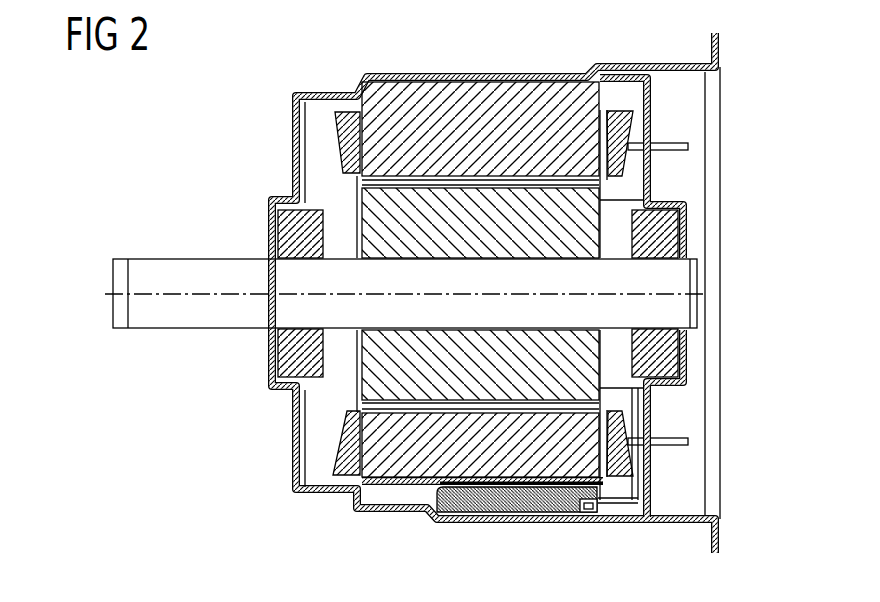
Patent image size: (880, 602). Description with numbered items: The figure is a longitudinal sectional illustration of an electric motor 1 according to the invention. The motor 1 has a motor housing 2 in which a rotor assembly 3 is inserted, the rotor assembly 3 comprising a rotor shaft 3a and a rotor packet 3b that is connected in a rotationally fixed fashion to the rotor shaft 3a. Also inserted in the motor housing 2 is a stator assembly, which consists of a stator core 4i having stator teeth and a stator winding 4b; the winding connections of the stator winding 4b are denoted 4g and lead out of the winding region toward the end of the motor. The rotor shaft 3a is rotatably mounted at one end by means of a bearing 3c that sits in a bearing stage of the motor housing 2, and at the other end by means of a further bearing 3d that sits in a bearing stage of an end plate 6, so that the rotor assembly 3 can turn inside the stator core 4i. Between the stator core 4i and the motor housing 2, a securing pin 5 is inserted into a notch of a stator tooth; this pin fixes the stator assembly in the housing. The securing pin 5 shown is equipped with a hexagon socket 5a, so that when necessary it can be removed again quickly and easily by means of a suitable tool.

The motor 1 is at (124, 130).
The motor housing 2 is at (300, 93).
The rotor assembly 3 is at (336, 208).
The rotor shaft 3a is at (158, 267).
The rotor packet 3b is at (375, 220).
The bearing 3c is at (315, 378).
The further bearing 3d is at (688, 226).
The stator winding 4b is at (340, 115).
The winding connections 4g is at (672, 144).
The stator core 4i is at (518, 90).
The securing pin 5 is at (508, 510).
The hexagon socket 5a is at (587, 512).
The end plate 6 is at (688, 388).